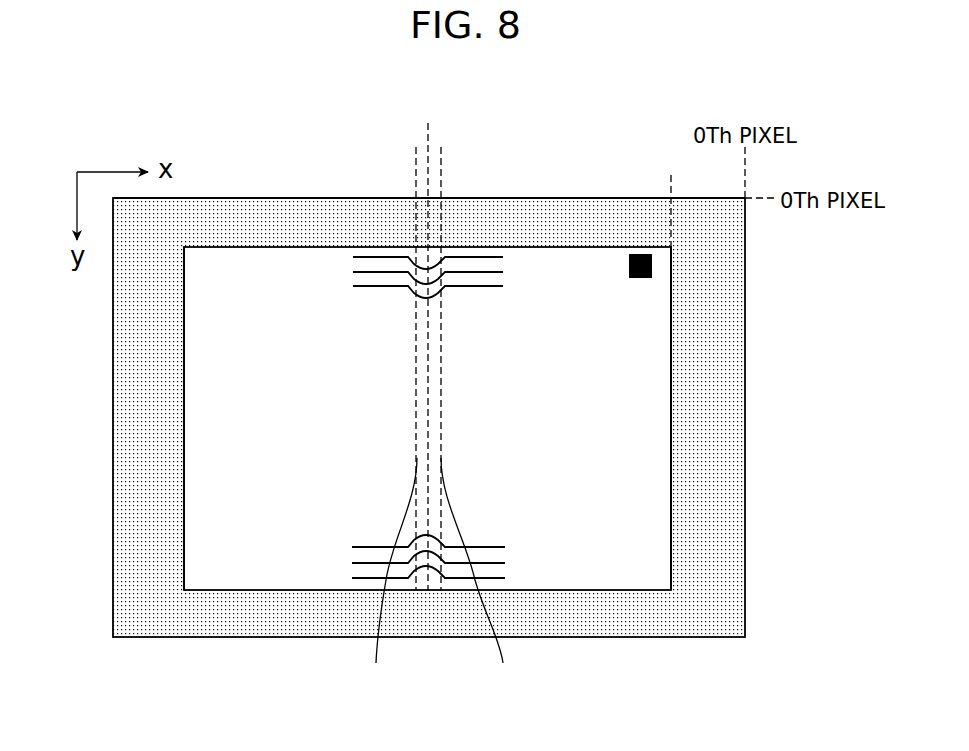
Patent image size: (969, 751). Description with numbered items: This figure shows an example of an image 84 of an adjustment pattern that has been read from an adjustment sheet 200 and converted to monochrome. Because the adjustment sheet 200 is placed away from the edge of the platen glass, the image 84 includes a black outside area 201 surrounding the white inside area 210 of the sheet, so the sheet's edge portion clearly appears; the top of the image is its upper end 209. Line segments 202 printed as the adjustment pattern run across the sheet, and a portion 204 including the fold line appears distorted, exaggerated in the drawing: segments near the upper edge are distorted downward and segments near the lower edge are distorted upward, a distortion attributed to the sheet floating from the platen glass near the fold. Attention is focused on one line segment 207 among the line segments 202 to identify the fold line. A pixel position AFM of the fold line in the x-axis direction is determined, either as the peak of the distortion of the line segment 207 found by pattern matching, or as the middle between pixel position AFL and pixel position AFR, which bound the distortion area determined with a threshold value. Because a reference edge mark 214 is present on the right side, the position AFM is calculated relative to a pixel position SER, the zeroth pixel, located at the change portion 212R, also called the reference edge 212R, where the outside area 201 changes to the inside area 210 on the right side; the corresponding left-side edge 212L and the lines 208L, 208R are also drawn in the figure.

The image of the adjustment pattern 84 is at (240, 198).
The adjustment sheet 200 is at (429, 465).
The outside area of the adjustment sheet 201 is at (706, 456).
The line segments 202 is at (398, 424).
The portion including a fold line 204 is at (435, 257).
The line segment 207 is at (375, 257).
The left boundary line 208L is at (387, 578).
The right boundary line 208R is at (485, 578).
The upper end of the image of the adjustment pattern 209 is at (562, 198).
The inside area of the adjustment sheet 210 is at (607, 455).
The left edge of display area 212L is at (184, 353).
The change portion (reference edge) 212R is at (671, 387).
The reference edge mark 214 is at (640, 265).
The pixel position of the fold line AFM is at (428, 133).
The pixel position AFL is at (416, 155).
The pixel position AFR is at (441, 150).
The pixel position SER is at (670, 198).